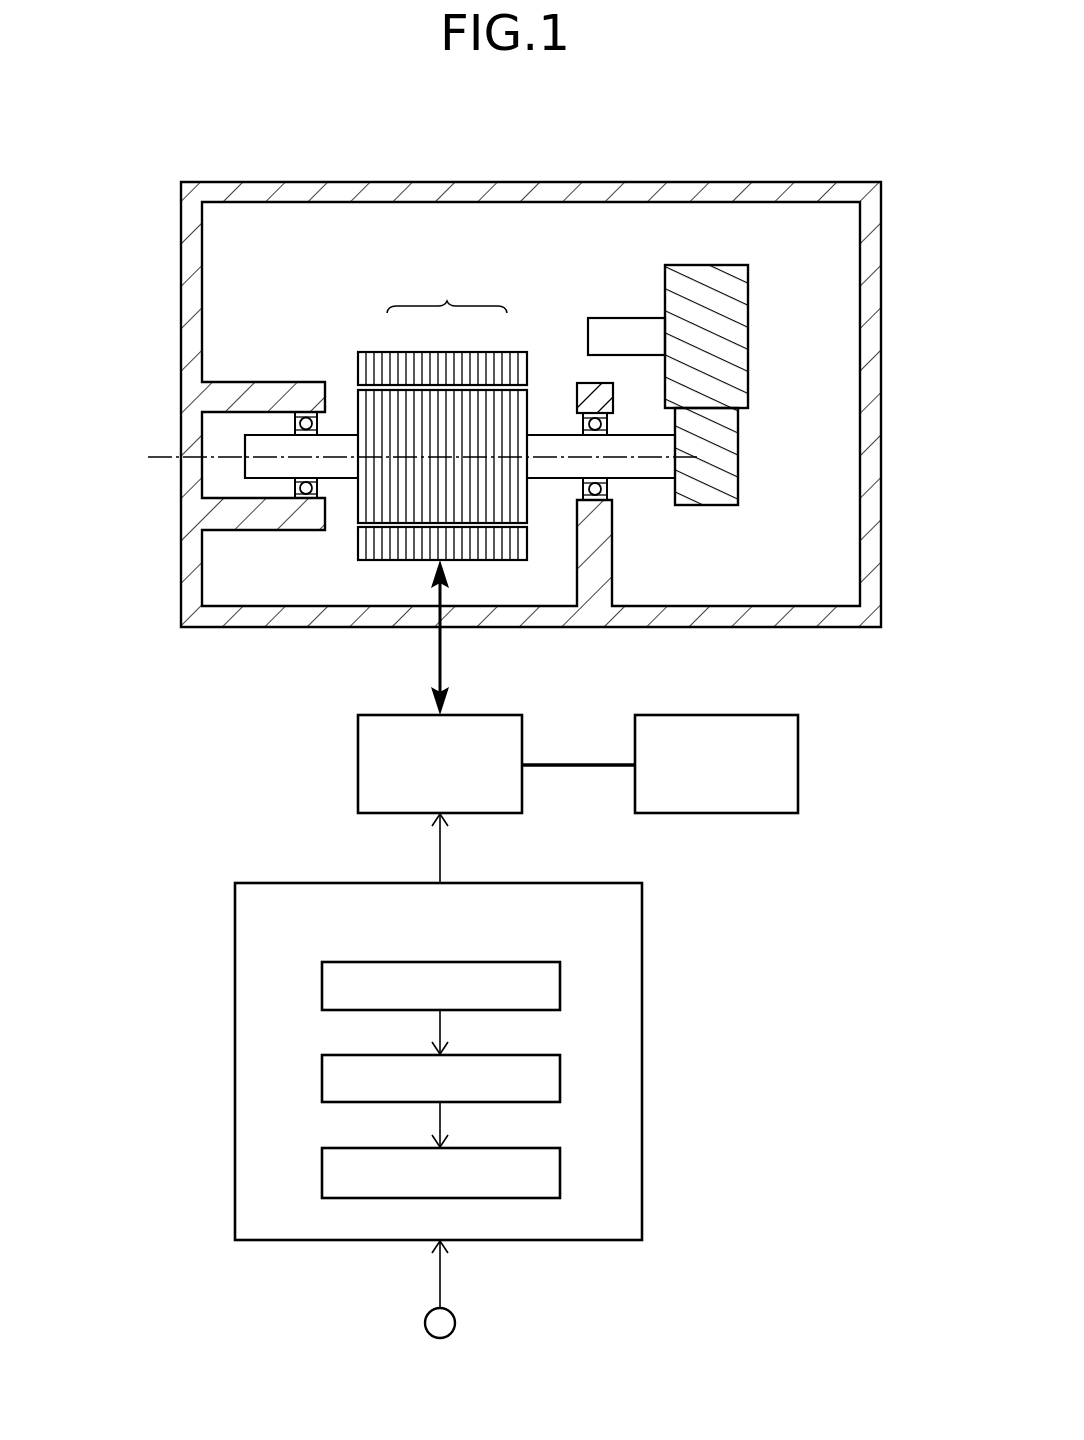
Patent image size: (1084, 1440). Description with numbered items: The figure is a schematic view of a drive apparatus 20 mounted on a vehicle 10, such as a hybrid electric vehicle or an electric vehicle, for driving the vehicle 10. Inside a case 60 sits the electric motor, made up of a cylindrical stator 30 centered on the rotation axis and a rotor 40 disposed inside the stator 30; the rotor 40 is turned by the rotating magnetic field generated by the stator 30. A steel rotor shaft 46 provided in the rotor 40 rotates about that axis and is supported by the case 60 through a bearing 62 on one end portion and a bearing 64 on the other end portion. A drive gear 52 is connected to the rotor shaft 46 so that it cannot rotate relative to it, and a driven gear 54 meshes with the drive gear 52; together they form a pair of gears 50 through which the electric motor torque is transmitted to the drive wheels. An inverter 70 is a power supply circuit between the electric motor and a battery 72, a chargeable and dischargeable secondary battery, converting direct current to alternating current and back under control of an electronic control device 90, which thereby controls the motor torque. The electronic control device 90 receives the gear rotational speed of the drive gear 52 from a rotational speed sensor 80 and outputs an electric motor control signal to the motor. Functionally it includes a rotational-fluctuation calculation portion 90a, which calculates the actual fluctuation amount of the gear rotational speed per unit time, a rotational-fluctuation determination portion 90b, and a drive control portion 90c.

The vehicle 10 is at (715, 128).
The drive apparatus 20 is at (725, 870).
The stator 30 is at (398, 362).
The rotor 40 is at (487, 400).
The rotor shaft 46 is at (341, 470).
The pair of gears 50 is at (795, 357).
The drive gear 52 is at (738, 439).
The driven gear 54 is at (740, 362).
The case 60 is at (517, 191).
The bearing 62 is at (316, 427).
The bearing 64 is at (583, 428).
The inverter 70 is at (488, 722).
The battery 72 is at (770, 722).
The rotational speed sensor 80 is at (441, 1338).
The electronic control device 90 is at (593, 893).
The rotational-fluctuation calculation portion 90a is at (560, 995).
The rotational-fluctuation determination portion 90b is at (560, 1085).
The drive control portion 90c is at (560, 1162).